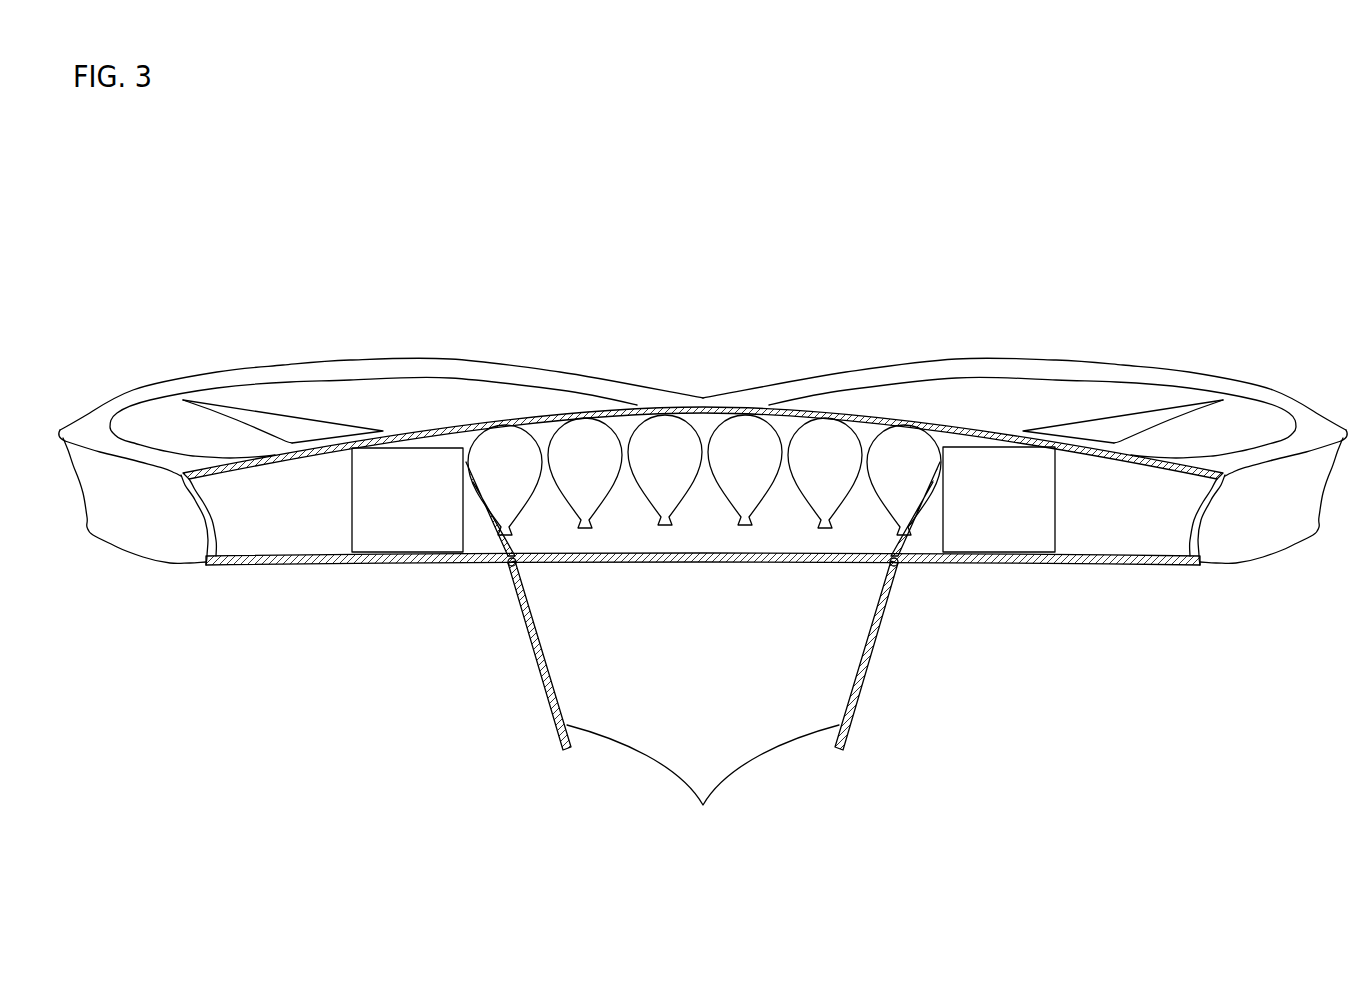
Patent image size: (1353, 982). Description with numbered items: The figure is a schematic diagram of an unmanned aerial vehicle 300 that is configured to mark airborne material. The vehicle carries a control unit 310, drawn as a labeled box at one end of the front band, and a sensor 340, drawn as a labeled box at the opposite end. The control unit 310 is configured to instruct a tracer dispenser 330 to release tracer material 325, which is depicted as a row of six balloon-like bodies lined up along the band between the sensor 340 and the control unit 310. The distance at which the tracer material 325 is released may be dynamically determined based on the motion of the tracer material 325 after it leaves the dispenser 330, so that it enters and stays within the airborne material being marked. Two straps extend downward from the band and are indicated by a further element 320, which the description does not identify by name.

The unmanned aerial vehicle 300 is at (1178, 148).
The control unit 310 is at (983, 538).
The strap 320 is at (655, 578).
The tracer material 325 is at (488, 485).
The tracer dispenser 330 is at (703, 778).
The sensor 340 is at (392, 523).